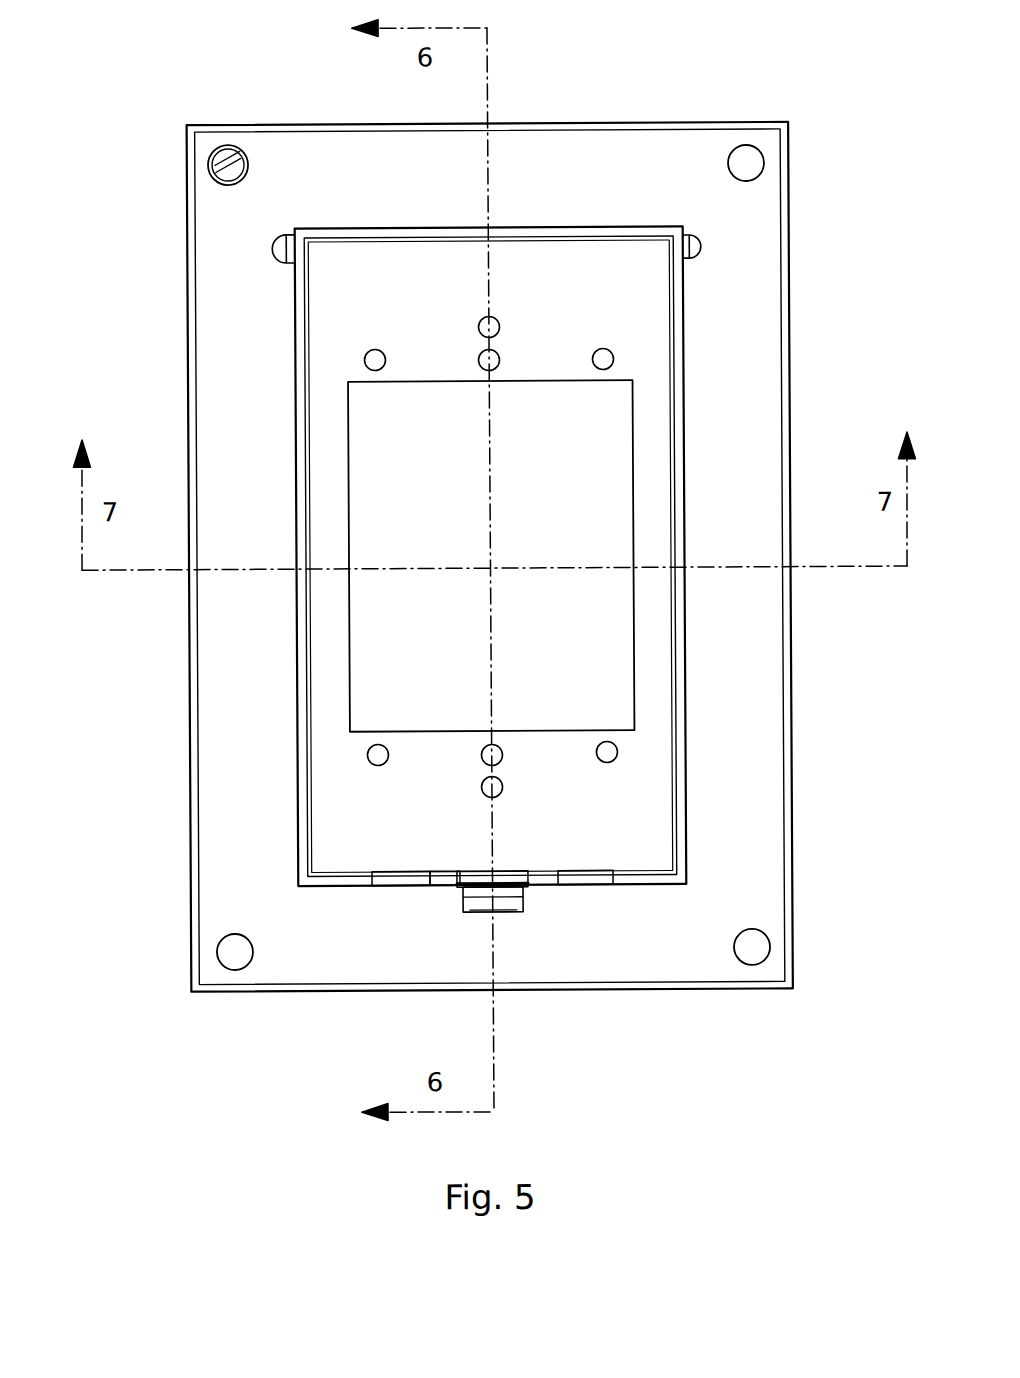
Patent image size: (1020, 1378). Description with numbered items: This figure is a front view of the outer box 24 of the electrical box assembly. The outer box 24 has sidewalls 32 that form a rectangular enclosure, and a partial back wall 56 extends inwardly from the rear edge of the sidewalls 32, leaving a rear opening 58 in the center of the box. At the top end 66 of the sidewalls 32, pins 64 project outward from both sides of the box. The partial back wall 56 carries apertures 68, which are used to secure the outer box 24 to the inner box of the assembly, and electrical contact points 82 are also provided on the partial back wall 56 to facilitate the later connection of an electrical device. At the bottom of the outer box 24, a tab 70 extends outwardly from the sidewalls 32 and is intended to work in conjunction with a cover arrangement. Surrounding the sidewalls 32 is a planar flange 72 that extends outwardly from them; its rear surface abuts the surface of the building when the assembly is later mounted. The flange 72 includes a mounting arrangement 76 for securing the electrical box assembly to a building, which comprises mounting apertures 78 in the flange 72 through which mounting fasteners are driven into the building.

The outer box 24 is at (154, 165).
The sidewalls 32 is at (679, 388).
The partial back wall 56 is at (548, 305).
The rear opening 58 is at (562, 537).
The pins 64 is at (275, 244).
The top end 66 is at (684, 229).
The apertures 68 is at (376, 361).
The tab 70 is at (491, 913).
The flange 72 is at (747, 555).
The mounting arrangement 76 is at (232, 147).
The mounting apertures 78 is at (748, 164).
The electrical contact points 82 is at (488, 322).